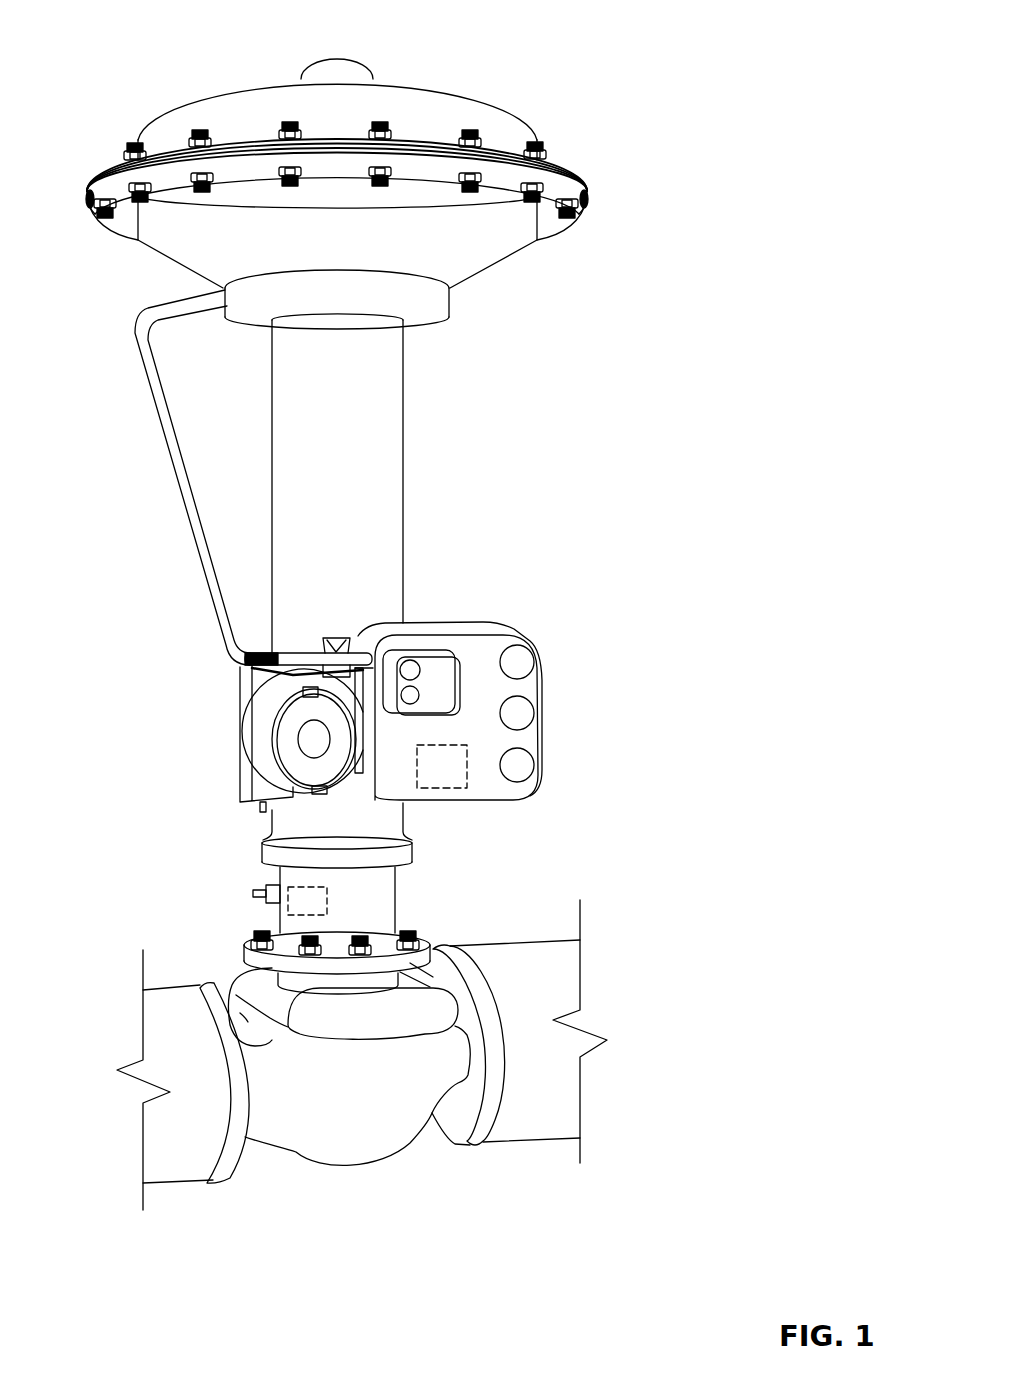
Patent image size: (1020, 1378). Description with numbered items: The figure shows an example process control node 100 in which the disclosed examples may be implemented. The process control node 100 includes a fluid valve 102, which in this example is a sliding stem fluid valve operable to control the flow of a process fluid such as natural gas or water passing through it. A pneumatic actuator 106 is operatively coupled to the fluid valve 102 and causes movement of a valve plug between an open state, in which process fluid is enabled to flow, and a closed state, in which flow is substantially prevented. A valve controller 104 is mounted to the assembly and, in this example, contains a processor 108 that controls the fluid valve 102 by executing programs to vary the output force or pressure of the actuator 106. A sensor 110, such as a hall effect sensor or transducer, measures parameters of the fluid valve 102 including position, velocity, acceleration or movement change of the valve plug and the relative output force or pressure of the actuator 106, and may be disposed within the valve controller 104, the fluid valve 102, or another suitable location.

The process control node 100 is at (683, 43).
The fluid valve 102 is at (226, 963).
The valve controller 104 is at (528, 624).
The pneumatic actuator 106 is at (127, 141).
The processor 108 is at (440, 788).
The sensor 110 is at (297, 886).